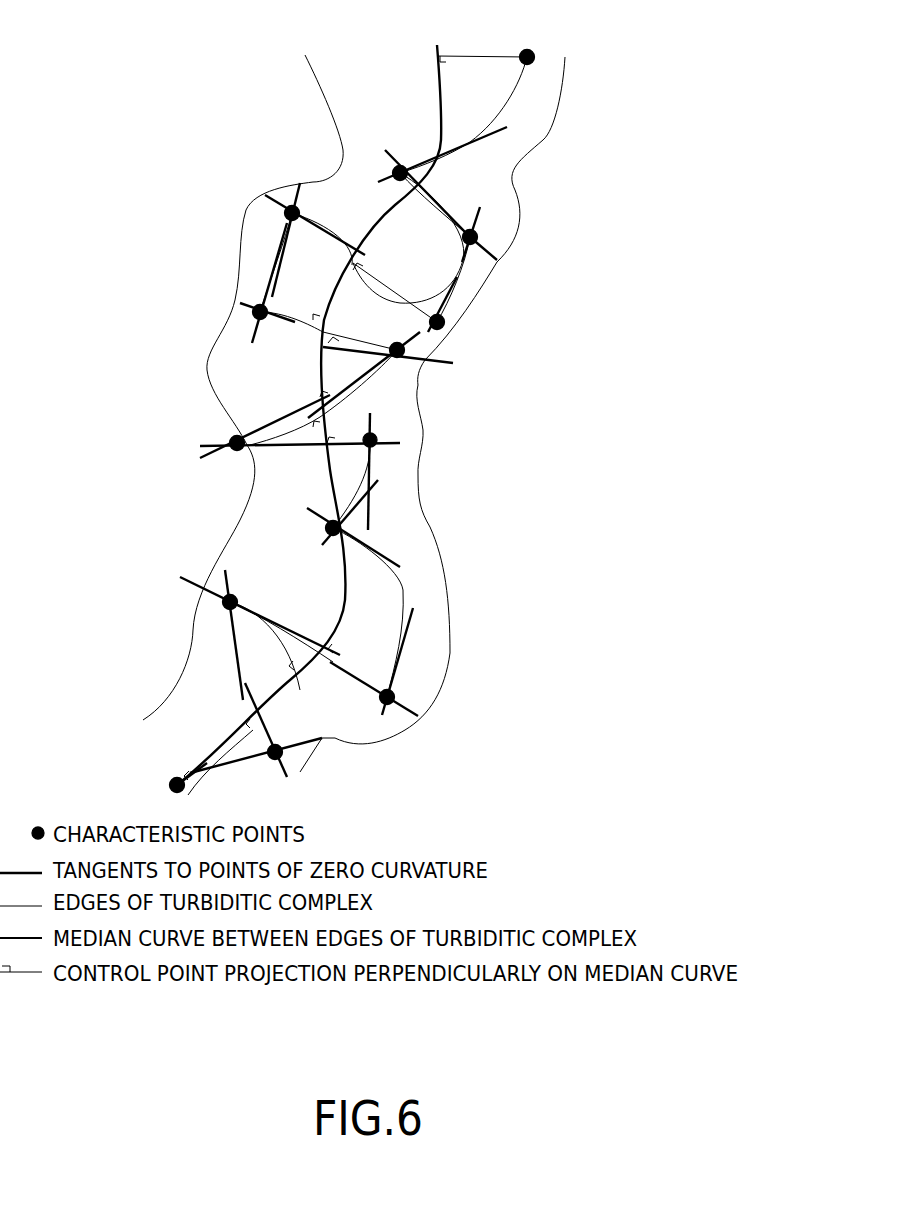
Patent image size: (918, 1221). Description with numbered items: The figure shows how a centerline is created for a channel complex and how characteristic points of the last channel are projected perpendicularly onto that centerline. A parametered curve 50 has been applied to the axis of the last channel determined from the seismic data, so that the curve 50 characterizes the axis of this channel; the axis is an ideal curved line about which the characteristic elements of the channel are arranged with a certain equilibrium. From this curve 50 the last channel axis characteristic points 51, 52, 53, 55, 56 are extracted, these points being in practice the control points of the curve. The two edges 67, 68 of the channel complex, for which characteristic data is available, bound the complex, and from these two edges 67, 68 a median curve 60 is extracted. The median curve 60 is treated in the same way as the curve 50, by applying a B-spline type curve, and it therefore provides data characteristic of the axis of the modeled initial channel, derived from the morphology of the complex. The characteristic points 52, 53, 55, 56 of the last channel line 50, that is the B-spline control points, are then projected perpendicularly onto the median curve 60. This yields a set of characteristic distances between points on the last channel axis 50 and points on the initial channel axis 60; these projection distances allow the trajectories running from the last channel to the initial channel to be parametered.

The parametered curve 50 is at (508, 85).
The last channel axis characteristic point 51 is at (530, 52).
The last channel axis characteristic point 52 is at (395, 180).
The last channel axis characteristic point 53 is at (478, 238).
The last channel axis characteristic point 55 is at (392, 706).
The last channel axis characteristic point 56 is at (222, 606).
The median curve 60 is at (438, 88).
The edge of the channel complex 67 is at (206, 370).
The edge of the channel complex 68 is at (424, 428).